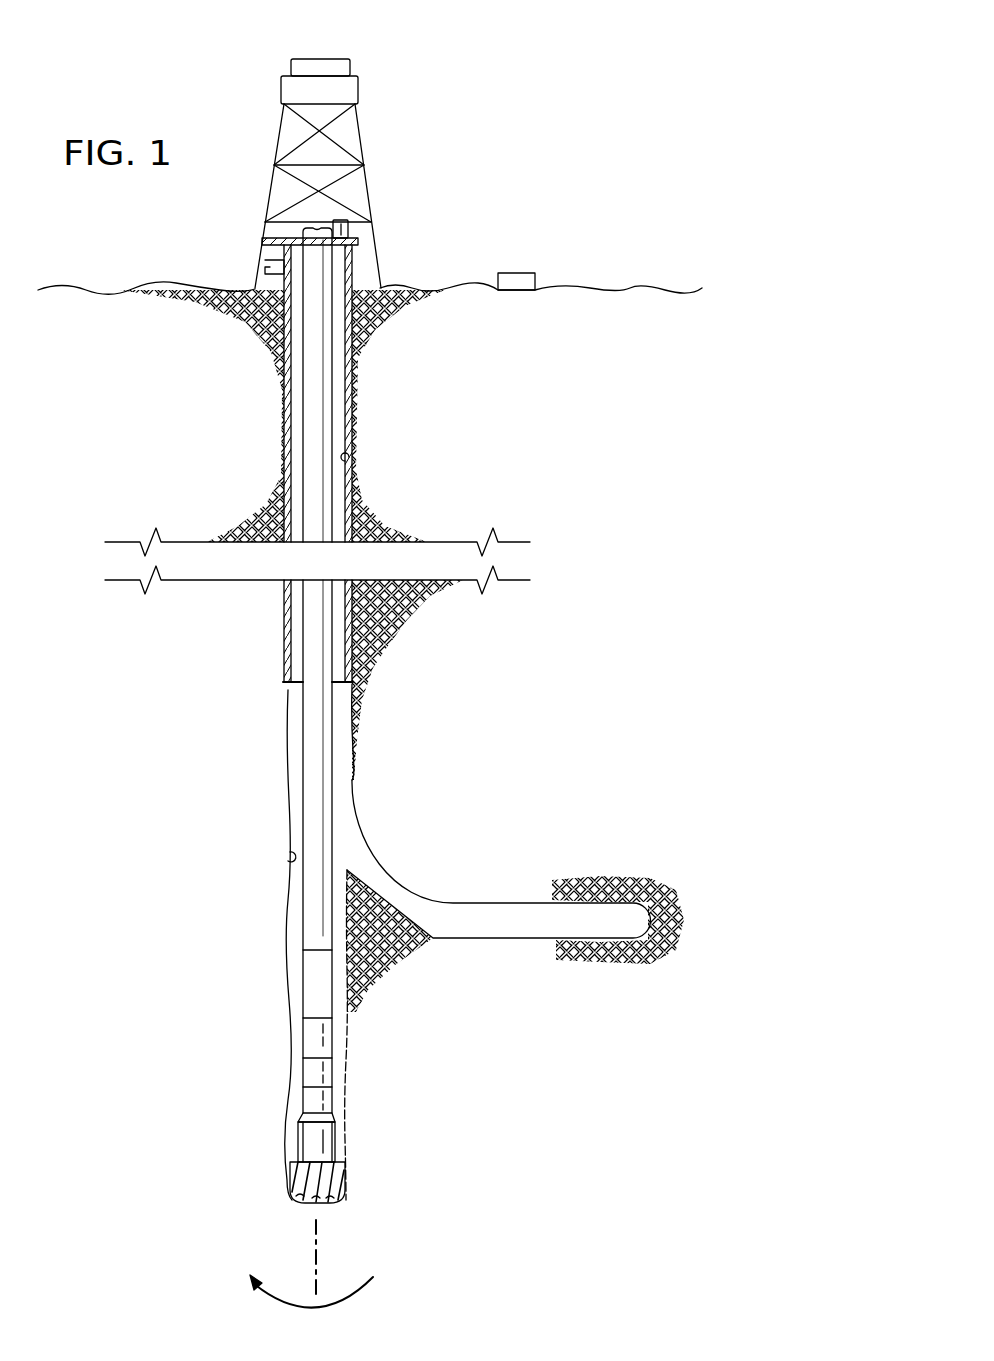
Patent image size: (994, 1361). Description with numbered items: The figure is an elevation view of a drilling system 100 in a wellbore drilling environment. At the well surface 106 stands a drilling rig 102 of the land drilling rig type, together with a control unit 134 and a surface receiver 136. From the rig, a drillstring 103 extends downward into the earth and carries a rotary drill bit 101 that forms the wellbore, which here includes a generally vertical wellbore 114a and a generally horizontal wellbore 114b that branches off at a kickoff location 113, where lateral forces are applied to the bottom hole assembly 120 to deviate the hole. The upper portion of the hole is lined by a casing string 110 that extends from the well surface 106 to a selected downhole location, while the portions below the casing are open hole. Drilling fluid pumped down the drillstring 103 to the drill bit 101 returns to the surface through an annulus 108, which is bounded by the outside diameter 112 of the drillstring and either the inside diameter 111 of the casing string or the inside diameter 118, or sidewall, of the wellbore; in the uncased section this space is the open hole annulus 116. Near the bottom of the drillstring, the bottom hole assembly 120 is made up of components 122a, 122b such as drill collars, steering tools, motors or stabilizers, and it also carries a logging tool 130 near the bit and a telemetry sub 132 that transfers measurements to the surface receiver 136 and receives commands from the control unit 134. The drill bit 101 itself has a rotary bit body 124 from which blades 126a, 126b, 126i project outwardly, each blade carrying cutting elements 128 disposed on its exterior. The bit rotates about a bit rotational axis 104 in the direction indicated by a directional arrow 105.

The drilling system 100 is at (526, 66).
The drill bit 101 is at (184, 1180).
The drilling rig 102 is at (208, 105).
The drillstring 103 is at (339, 402).
The bit rotational axis 104 is at (313, 1232).
The directional arrow 105 is at (374, 1281).
The well surface 106 is at (366, 265).
The annulus 108 is at (296, 407).
The casing string 110 is at (285, 457).
The inside diameter of casing string 111 is at (352, 457).
The outside diameter of drillstring 112 is at (302, 622).
The kickoff location 113 is at (349, 785).
The generally vertical wellbore 114a is at (190, 660).
The generally horizontal wellbore 114b is at (495, 882).
The open hole annulus 116 is at (300, 795).
The inside diameter of wellbore 118 is at (287, 857).
The bottom hole assembly 120 is at (368, 1069).
The component of bottom hole assembly 122a is at (311, 978).
The component of bottom hole assembly 122b is at (311, 1037).
The rotary bit body 124 is at (294, 1142).
The blade 126a is at (291, 1186).
The blade 126b is at (293, 1177).
The blade 126i is at (341, 1178).
The cutting elements 128 is at (345, 1203).
The logging tool 130 is at (311, 1102).
The telemetry sub 132 is at (311, 1072).
The control unit 134 is at (352, 226).
The surface receiver 136 is at (526, 272).